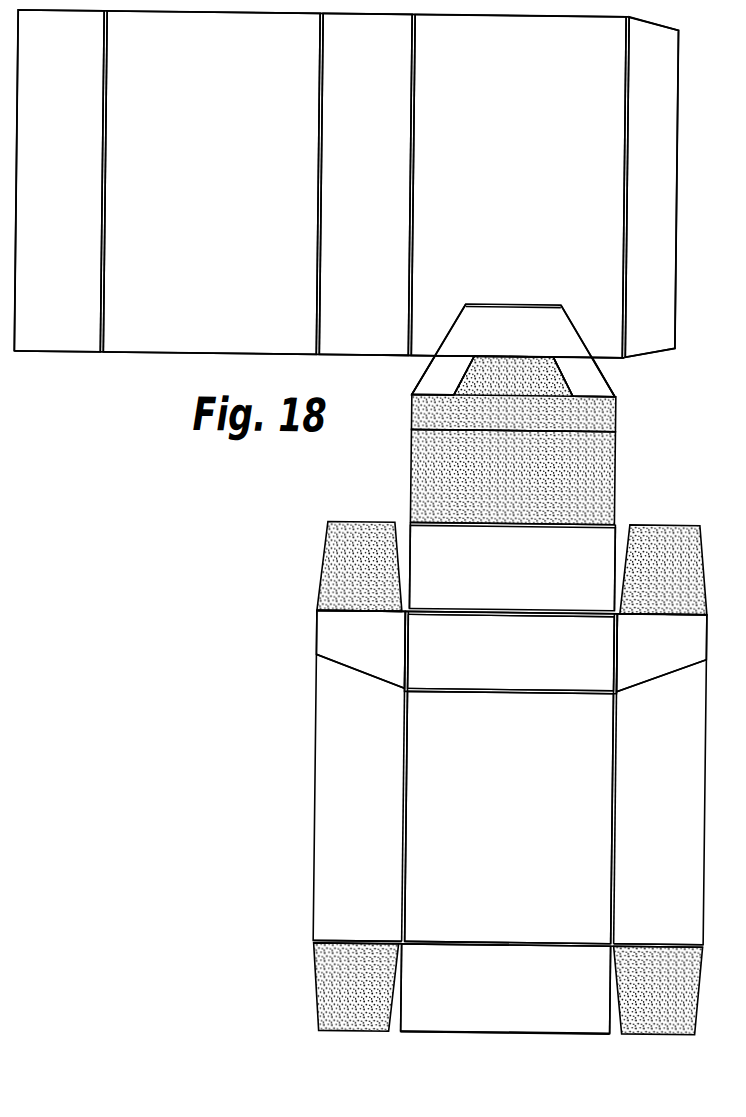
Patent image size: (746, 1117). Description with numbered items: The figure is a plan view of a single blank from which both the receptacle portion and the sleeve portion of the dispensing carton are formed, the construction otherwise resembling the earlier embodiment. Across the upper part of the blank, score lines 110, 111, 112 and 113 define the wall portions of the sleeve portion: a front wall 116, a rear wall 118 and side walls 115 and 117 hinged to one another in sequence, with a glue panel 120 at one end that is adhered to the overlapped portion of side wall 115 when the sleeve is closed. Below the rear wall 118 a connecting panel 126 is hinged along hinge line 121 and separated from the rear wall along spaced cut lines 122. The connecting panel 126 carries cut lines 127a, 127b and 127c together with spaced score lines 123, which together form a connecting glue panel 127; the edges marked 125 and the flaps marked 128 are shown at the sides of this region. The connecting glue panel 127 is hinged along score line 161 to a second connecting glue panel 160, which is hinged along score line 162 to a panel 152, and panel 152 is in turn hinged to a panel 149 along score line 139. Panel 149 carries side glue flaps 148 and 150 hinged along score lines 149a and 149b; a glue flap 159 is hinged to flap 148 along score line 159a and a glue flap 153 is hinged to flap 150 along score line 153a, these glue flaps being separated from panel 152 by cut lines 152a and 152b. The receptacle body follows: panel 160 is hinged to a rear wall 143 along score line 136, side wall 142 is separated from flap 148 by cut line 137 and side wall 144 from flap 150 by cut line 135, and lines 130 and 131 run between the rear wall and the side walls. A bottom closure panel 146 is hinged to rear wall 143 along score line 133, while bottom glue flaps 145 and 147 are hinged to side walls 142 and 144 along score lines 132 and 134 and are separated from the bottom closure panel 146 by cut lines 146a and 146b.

The score line 110 is at (100, 148).
The score line 111 is at (315, 120).
The score line 112 is at (407, 192).
The score line 113 is at (617, 130).
The side wall 115 is at (35, 215).
The front wall 116 is at (203, 195).
The side wall 117 is at (348, 161).
The rear wall 118 is at (493, 221).
The glue panel 120 is at (634, 201).
The hinge line 121 is at (513, 302).
The cut lines 122 is at (446, 329).
The score lines 123 is at (458, 354).
The corner cut edges 125 is at (410, 393).
The connecting panel 126 is at (510, 342).
The connecting glue panel 127 is at (466, 409).
The cut line 127a is at (406, 358).
The cut line 127b is at (498, 355).
The cut line 127c is at (626, 356).
The corner flaps 128 is at (441, 378).
The fold line 130 is at (407, 843).
The fold line 131 is at (615, 812).
The score line 132 is at (354, 939).
The score line 133 is at (502, 940).
The score line 134 is at (650, 938).
The cut line 135 is at (654, 677).
The score line 136 is at (458, 689).
The cut line 137 is at (352, 670).
The score line 139 is at (443, 613).
The side wall 142 is at (346, 794).
The rear wall 143 is at (496, 772).
The side wall 144 is at (646, 801).
The bottom glue flap 145 is at (356, 1015).
The bottom closure panel 146 is at (485, 1013).
The cut line 146a is at (406, 982).
The cut line 146b is at (614, 985).
The bottom glue flap 147 is at (662, 1012).
The side glue flap 148 is at (344, 648).
The panel 149 is at (529, 666).
The score line 149a is at (408, 672).
The score line 149b is at (613, 665).
The side glue flap 150 is at (639, 645).
The panel 152 is at (491, 593).
The cut line 152a is at (411, 548).
The cut line 152b is at (614, 572).
The glue flap 153 is at (667, 547).
The score line 153a is at (644, 611).
The glue flap 159 is at (350, 567).
The score line 159a is at (341, 612).
The second connecting glue panel 160 is at (544, 468).
The score line 161 is at (584, 427).
The score line 162 is at (573, 525).